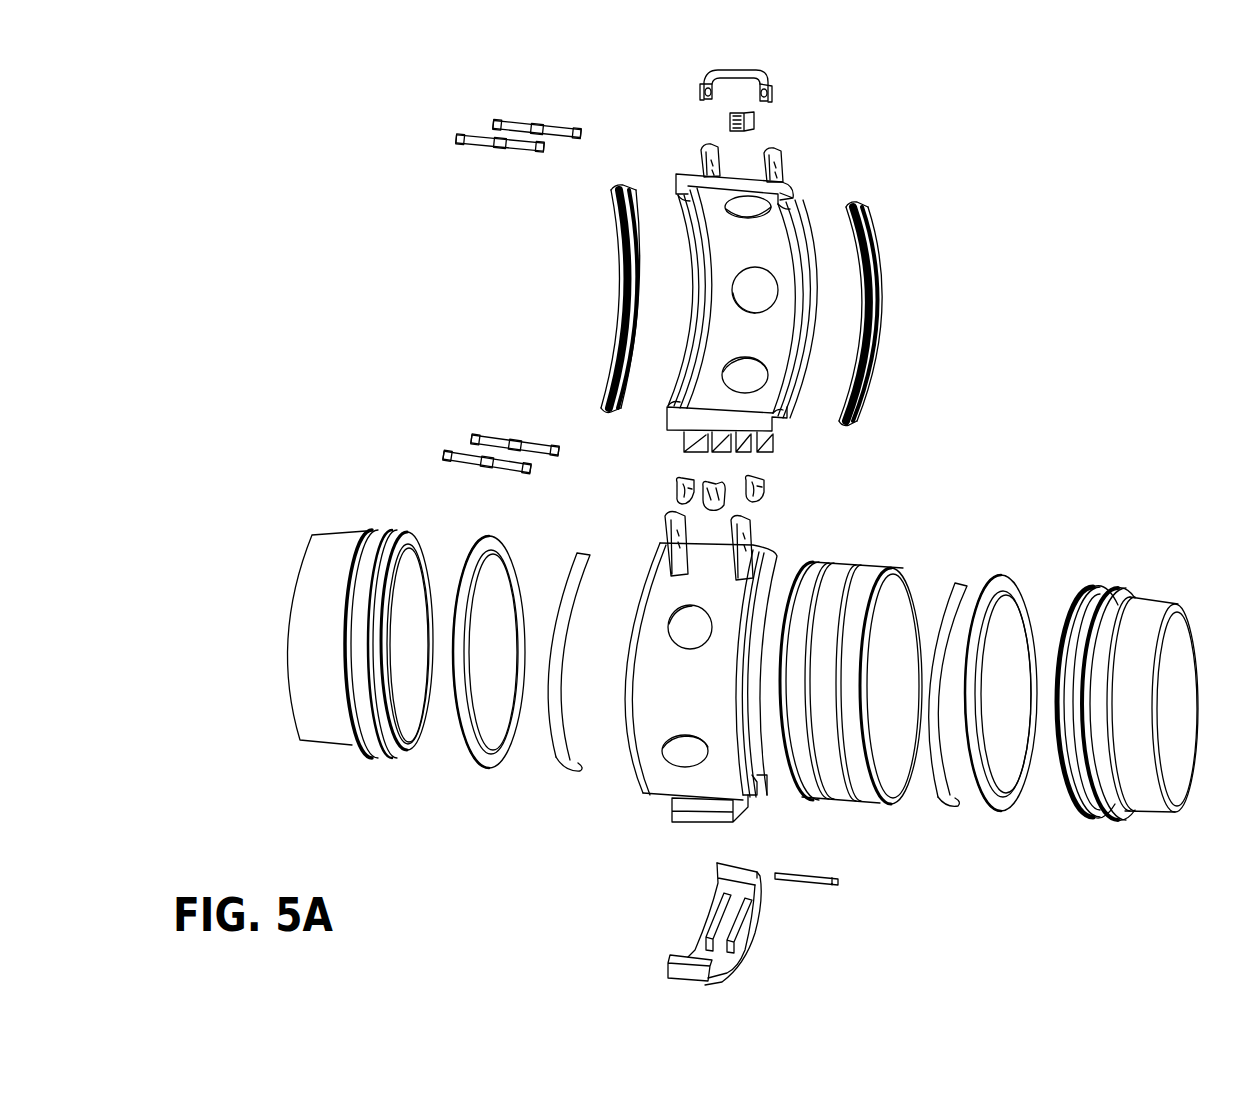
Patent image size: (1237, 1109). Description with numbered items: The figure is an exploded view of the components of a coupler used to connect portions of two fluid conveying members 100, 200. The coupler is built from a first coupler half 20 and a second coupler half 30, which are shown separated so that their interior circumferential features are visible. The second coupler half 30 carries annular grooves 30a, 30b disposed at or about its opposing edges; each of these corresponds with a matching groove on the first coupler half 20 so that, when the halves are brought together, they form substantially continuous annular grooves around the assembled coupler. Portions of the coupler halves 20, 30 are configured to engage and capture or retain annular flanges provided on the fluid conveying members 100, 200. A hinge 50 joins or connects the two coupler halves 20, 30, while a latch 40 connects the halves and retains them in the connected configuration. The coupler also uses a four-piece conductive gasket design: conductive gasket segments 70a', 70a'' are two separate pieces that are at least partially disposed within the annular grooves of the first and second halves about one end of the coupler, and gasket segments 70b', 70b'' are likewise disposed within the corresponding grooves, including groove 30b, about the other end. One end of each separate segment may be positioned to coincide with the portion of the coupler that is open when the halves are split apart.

The first coupler half 20 is at (660, 778).
The second coupler half 30 is at (800, 172).
The annular groove 30a is at (800, 240).
The annular groove 30b is at (695, 230).
The latch 40 is at (755, 940).
The hinge 50 is at (776, 67).
The gasket segment 70a' is at (908, 314).
The gasket segment 70b' is at (594, 299).
The gasket segment 70a'' is at (945, 727).
The gasket segment 70b'' is at (563, 697).
The fluid conveying member 100 is at (345, 525).
The fluid conveying member 200 is at (1157, 585).